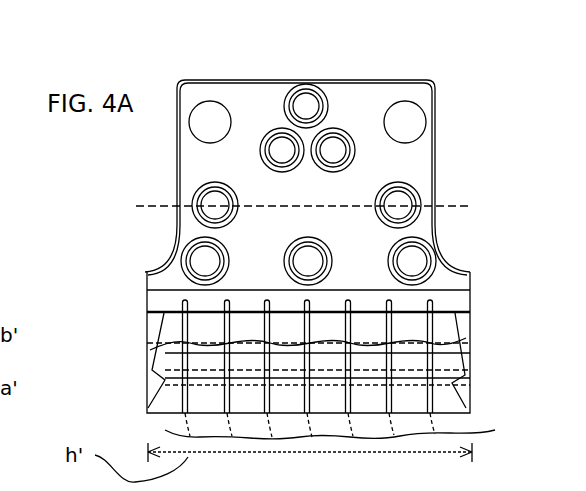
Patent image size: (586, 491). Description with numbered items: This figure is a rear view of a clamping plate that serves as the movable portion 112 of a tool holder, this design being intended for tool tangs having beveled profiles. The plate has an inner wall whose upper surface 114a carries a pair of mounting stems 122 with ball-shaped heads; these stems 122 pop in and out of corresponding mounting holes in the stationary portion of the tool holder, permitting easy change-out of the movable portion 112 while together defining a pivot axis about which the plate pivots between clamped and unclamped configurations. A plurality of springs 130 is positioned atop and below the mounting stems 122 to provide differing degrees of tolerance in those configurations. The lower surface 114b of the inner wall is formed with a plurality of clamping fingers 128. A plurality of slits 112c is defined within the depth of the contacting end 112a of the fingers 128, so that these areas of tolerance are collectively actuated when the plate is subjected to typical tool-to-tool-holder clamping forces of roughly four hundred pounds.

The movable portion 112 is at (478, 173).
The upper surface 114a is at (423, 95).
The lower surface 114b is at (445, 343).
The mounting stem 122 is at (205, 190).
The spring 130 is at (345, 128).
The contacting end 112a is at (445, 378).
The slit 112c is at (147, 344).
The clamping finger 128 is at (452, 437).